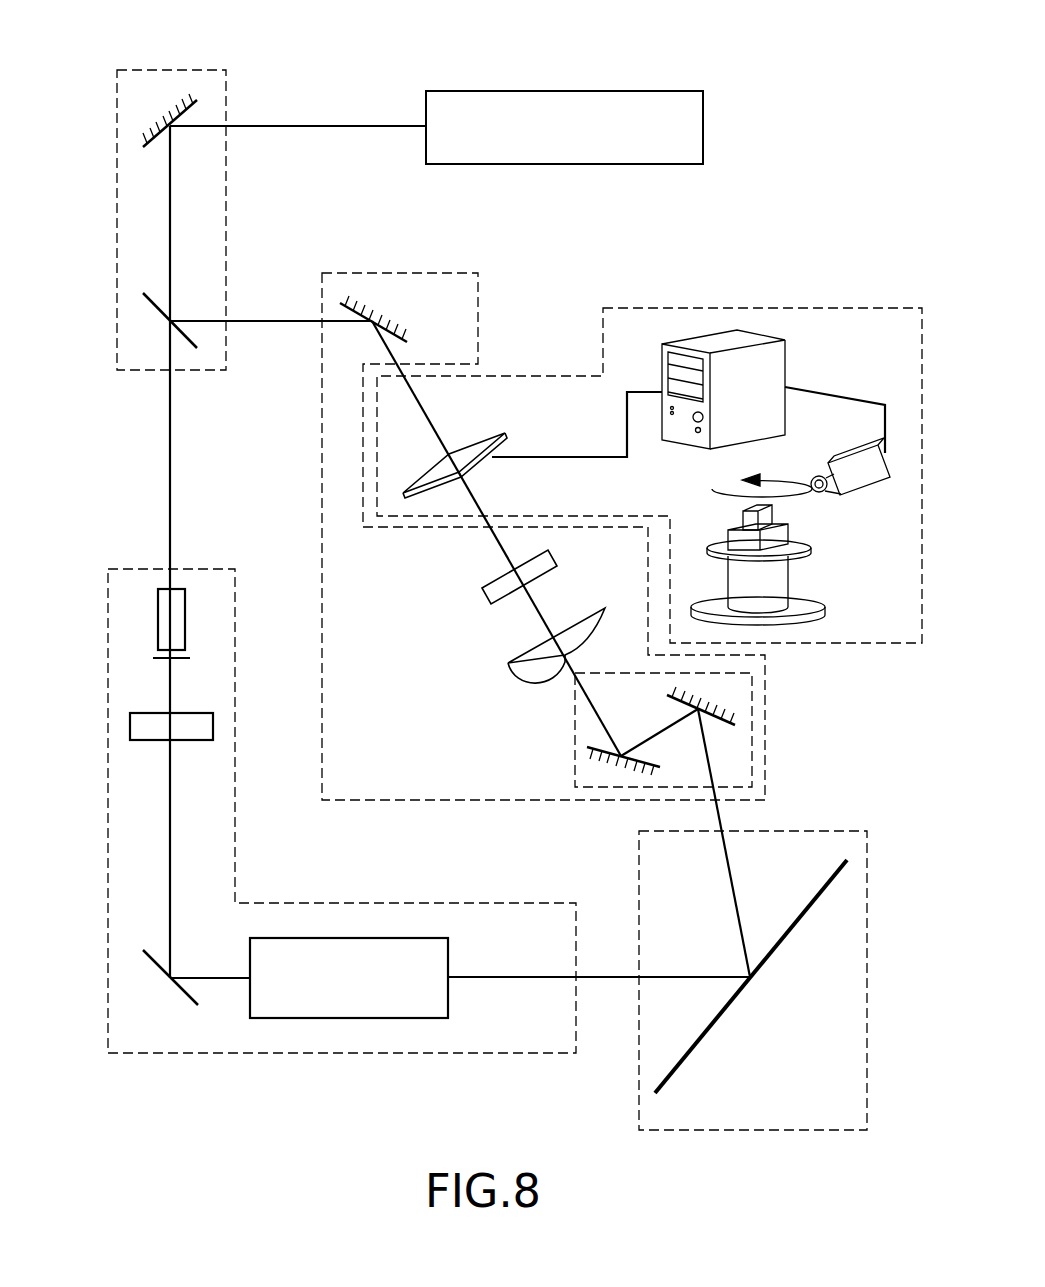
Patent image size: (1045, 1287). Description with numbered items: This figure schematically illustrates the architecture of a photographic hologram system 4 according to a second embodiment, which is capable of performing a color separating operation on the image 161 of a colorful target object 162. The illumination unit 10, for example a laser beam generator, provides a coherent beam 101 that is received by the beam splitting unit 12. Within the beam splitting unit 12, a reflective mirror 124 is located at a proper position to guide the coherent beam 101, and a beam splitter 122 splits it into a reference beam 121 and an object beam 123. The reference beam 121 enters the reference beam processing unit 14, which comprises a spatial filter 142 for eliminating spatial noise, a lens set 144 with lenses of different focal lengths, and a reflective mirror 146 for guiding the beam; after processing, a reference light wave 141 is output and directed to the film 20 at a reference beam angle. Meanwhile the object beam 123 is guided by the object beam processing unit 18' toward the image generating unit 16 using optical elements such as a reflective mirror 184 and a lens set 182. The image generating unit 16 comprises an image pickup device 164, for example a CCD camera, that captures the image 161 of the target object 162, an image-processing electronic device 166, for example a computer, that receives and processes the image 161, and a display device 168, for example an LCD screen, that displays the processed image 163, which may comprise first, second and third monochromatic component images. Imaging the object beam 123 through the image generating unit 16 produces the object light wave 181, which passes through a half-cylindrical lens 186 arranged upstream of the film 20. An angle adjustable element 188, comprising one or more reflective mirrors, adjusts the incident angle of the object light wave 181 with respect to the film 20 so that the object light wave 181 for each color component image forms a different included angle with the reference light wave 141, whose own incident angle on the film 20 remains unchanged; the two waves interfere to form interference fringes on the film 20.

The photographic hologram system 4 is at (804, 47).
The illumination unit 10 is at (652, 90).
The coherent beam 101 is at (285, 123).
The beam splitting unit 12 is at (172, 70).
The reflective mirror 124 is at (157, 148).
The beam splitter 122 is at (157, 308).
The reference beam 121 is at (168, 495).
The object beam 123 is at (257, 322).
The reference beam processing unit 14 is at (193, 567).
The spatial filter 142 is at (157, 625).
The lens set 144 is at (157, 713).
The reflective mirror 146 is at (158, 963).
The reference light wave 141 is at (612, 982).
The film 20 is at (778, 830).
The object light wave 181 is at (718, 810).
The object beam processing unit 18' is at (543, 513).
The reflective mirror 184 is at (358, 300).
The image generating unit 16 is at (792, 307).
The display device 168 is at (470, 447).
The processed image 163 is at (633, 437).
The image-processing electronic device 166 is at (770, 385).
The image 161 is at (837, 398).
The image pickup device 164 is at (862, 480).
The target object 162 is at (765, 518).
The lens set 182 is at (500, 585).
The half-cylindrical lens 186 is at (520, 653).
The angle adjustable element 188 is at (575, 760).